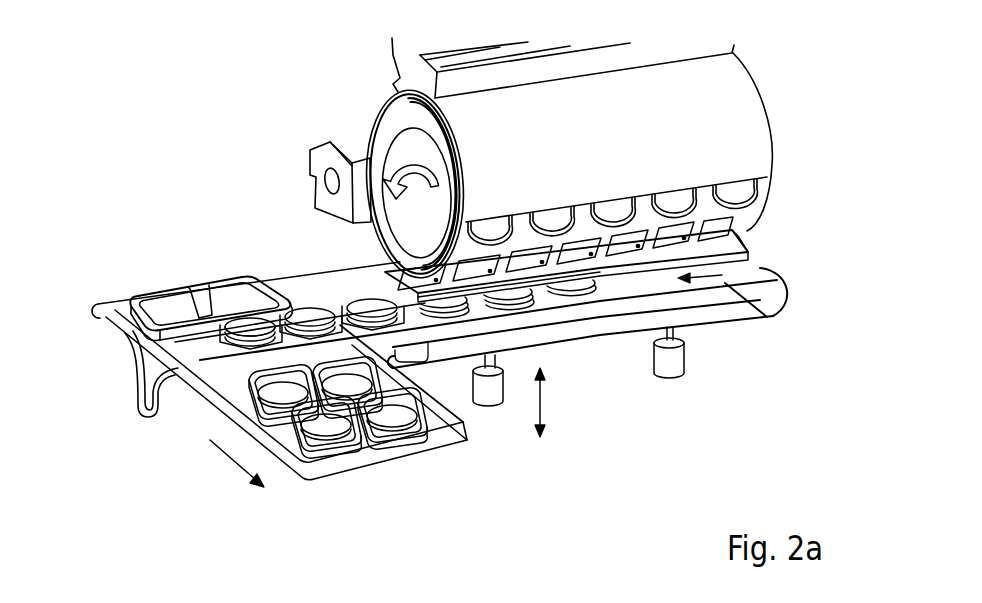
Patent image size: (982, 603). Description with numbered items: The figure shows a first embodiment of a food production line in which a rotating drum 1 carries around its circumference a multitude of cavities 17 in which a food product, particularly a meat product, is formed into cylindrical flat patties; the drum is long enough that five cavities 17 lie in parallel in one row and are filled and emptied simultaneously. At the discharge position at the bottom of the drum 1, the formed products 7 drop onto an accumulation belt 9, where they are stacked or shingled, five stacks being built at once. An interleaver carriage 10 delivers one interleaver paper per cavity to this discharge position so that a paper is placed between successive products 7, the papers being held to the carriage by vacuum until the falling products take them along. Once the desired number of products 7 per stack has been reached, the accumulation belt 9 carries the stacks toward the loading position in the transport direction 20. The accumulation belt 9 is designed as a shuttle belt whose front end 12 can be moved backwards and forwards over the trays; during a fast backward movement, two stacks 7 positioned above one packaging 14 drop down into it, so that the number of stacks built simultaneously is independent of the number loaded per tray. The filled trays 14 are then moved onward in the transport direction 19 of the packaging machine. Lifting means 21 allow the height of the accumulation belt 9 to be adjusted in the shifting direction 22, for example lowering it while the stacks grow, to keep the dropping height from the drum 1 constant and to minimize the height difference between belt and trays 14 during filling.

The drum 1 is at (383, 122).
The product 7 is at (330, 322).
The accumulation belt 9 is at (598, 295).
The interleaver carriage 10 is at (385, 280).
The front end of belt 12 is at (205, 345).
The packaging 14 is at (215, 297).
The cavity 17 is at (740, 200).
The transport direction of the packaging machine 19 is at (230, 462).
The transport direction of the accumulation belt 20 is at (708, 277).
The lifting means 21 is at (677, 380).
The shifting direction 22 is at (540, 398).